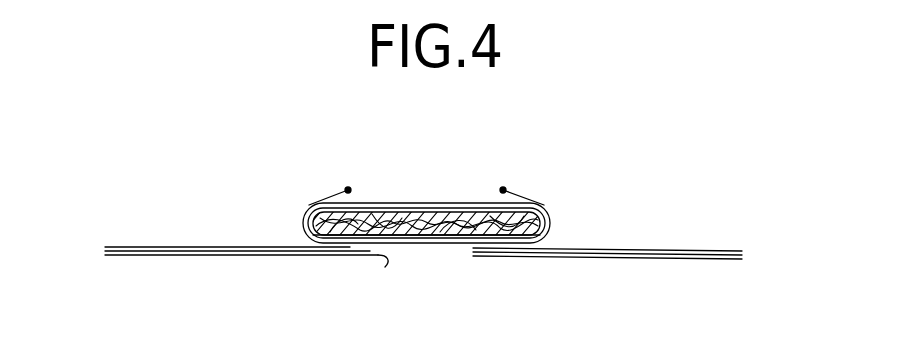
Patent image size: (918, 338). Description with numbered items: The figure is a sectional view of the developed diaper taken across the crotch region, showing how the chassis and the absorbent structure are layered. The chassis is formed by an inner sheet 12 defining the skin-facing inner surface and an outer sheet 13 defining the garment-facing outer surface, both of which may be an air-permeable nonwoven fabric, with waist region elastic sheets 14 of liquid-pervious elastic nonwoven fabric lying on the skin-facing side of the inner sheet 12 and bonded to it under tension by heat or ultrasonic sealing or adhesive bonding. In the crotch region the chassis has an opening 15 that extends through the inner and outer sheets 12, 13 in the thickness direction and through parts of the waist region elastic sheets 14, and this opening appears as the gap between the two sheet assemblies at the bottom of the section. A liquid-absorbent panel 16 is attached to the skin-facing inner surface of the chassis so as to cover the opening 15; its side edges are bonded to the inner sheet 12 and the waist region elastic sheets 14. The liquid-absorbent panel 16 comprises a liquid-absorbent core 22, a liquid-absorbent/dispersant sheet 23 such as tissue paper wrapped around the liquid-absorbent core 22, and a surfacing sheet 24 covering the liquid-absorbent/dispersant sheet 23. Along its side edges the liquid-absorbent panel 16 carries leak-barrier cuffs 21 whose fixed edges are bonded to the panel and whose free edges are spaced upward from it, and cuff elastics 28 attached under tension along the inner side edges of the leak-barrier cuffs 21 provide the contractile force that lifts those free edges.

The inner sheet 12 is at (424, 254).
The outer sheet 13 is at (140, 257).
The waist region elastic sheets 14 is at (137, 247).
The opening 15 is at (385, 267).
The liquid-absorbent panel 16 is at (424, 205).
The leak-barrier cuffs 21 is at (323, 195).
The liquid-absorbent core 22 is at (410, 237).
The liquid-absorbent/dispersant sheet 23 is at (427, 237).
The covering film 24 is at (467, 237).
The cuff elastics 28 is at (348, 188).